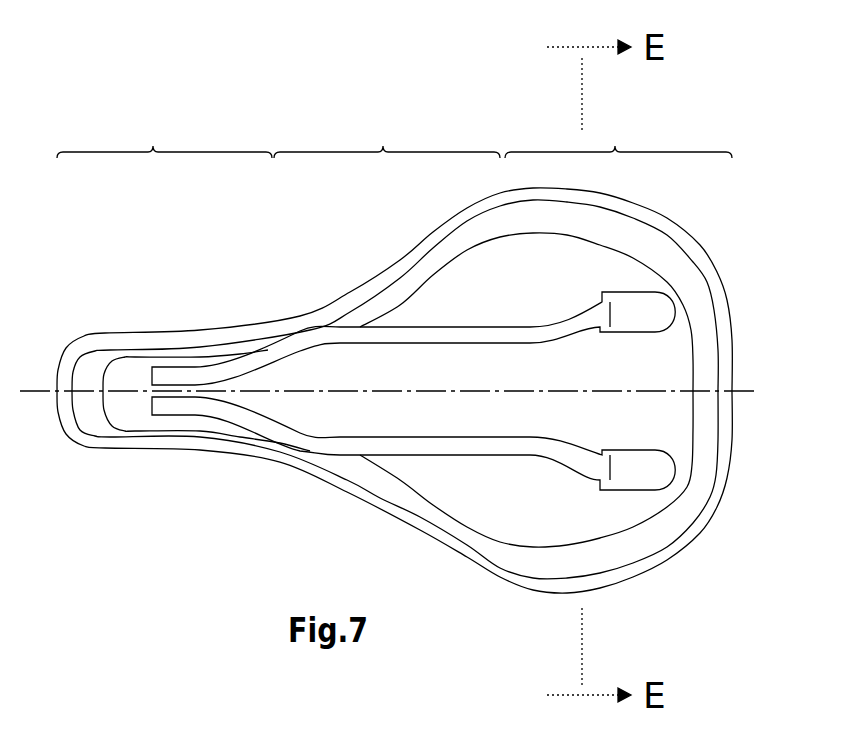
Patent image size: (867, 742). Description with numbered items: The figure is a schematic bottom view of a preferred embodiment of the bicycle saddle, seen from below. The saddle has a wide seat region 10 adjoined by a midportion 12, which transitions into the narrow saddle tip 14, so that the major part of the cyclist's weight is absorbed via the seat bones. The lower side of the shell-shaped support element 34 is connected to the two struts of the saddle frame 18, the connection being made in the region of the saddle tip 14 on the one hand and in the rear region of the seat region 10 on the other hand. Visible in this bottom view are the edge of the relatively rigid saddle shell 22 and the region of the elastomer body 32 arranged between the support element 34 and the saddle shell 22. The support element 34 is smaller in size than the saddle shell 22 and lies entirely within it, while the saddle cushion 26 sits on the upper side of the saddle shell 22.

The seat region 10 is at (618, 137).
The midportion 12 is at (387, 137).
The saddle tip 14 is at (164, 136).
The saddle frame 18 is at (267, 353).
The saddle shell 22 is at (713, 487).
The saddle cushion 26 is at (733, 440).
The elastomer body 32 is at (687, 282).
The support element 34 is at (448, 376).